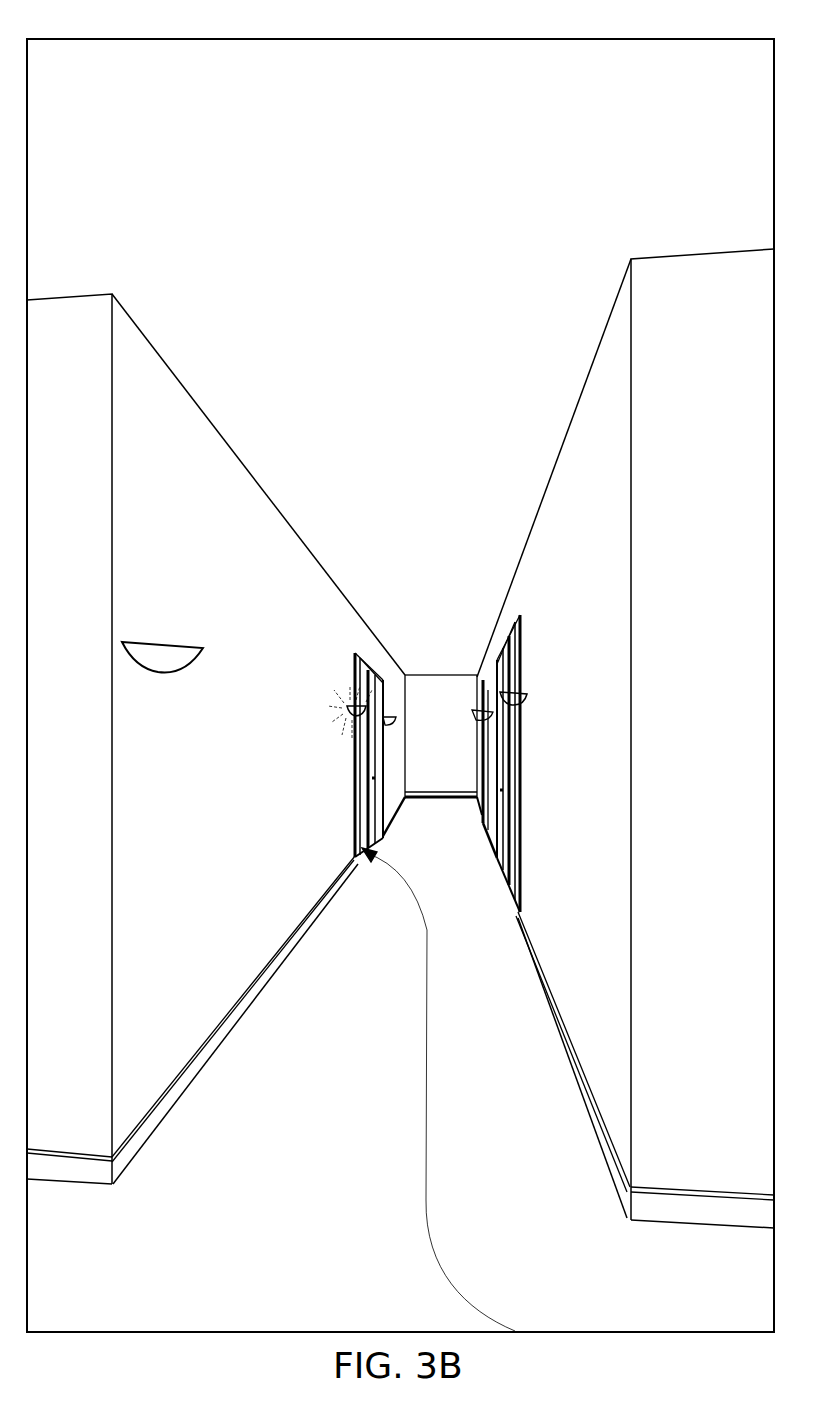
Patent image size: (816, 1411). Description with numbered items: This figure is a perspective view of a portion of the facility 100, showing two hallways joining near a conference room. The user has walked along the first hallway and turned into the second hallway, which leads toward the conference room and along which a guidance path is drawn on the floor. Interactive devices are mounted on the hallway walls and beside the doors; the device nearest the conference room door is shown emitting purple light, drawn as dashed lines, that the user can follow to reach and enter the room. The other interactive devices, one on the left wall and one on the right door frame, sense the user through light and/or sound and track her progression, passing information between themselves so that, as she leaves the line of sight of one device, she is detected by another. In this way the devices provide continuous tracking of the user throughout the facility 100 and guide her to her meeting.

The facility 100 is at (400, 667).